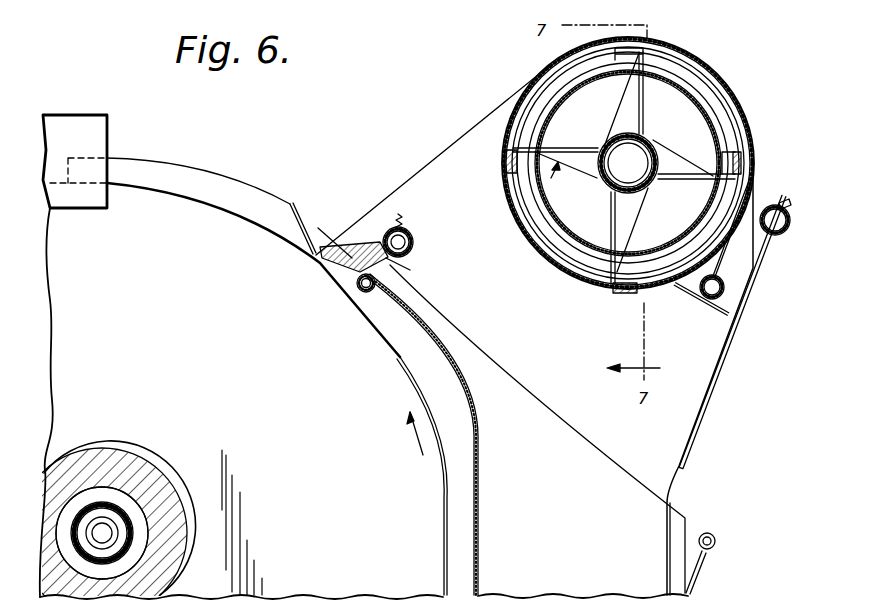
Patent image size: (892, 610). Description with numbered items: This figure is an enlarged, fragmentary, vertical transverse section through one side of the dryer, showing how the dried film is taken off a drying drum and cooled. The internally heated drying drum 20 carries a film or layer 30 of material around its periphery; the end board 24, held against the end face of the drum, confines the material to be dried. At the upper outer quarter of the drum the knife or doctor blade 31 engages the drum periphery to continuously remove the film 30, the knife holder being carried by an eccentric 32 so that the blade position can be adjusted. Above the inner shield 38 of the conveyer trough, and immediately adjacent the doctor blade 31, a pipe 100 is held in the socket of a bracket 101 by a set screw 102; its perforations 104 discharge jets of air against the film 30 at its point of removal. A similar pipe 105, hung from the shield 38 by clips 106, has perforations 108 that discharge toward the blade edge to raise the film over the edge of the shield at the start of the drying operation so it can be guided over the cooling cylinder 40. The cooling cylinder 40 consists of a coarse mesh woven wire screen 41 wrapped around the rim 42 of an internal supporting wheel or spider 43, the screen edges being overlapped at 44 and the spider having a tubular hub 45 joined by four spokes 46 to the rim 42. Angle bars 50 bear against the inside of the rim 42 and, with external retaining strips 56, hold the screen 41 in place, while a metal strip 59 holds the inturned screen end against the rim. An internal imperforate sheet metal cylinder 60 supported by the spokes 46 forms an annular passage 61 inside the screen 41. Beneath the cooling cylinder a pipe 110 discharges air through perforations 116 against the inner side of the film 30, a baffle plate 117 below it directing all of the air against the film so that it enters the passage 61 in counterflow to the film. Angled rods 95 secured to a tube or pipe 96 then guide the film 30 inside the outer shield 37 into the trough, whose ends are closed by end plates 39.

The drying drum 20 is at (160, 196).
The end board 24 is at (72, 115).
The film or layer of material 30 is at (457, 483).
The knife or doctor blade 31 is at (292, 204).
The eccentric 32 is at (95, 450).
The outer shield or panel 37 is at (700, 568).
The inner shield or panel 38 is at (480, 487).
The end plate 39 is at (540, 413).
The cooling cylinder 40 is at (549, 176).
The coarse mesh woven wire screen 41 is at (516, 215).
The rim 42 is at (535, 248).
The internal supporting wheel or spider 43 is at (554, 181).
The overlapped edges 44 is at (510, 166).
The tubular hub 45 is at (650, 186).
The spoke 46 is at (643, 115).
The angle bar 50 is at (628, 58).
The retaining strip 56 is at (508, 172).
The metal strip 59 is at (537, 102).
The internal imperforate sheet metal cylinder 60 is at (710, 132).
The annular passage 61 is at (707, 102).
The rod 95 is at (710, 395).
The tube or pipe 96 is at (786, 228).
The pipe 100 is at (410, 226).
The bracket 101 is at (405, 268).
The set screw 102 is at (405, 215).
The holes or perforations 104 is at (396, 258).
The pipe 105 is at (367, 292).
The clip 106 is at (385, 292).
The perforations 108 is at (356, 288).
The pipe 110 is at (706, 298).
The perforations 116 is at (725, 270).
The baffle plate 117 is at (725, 318).